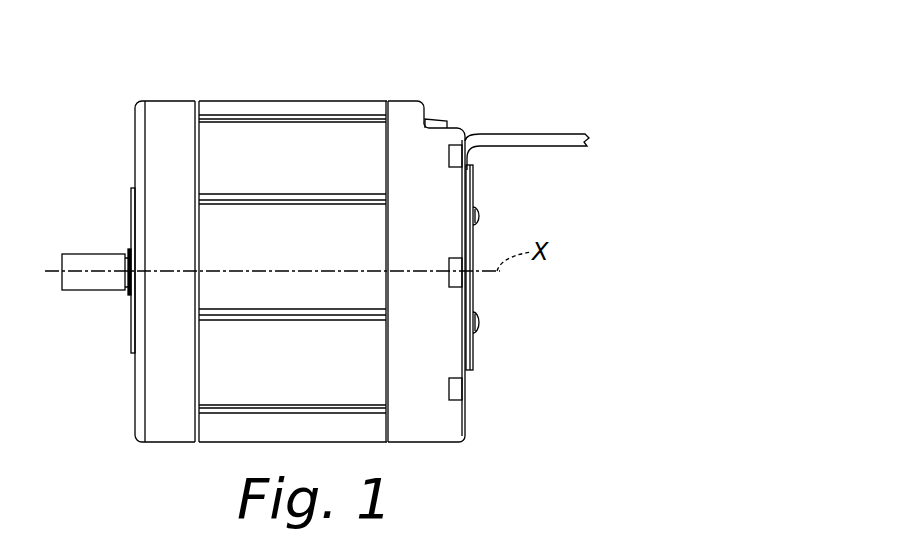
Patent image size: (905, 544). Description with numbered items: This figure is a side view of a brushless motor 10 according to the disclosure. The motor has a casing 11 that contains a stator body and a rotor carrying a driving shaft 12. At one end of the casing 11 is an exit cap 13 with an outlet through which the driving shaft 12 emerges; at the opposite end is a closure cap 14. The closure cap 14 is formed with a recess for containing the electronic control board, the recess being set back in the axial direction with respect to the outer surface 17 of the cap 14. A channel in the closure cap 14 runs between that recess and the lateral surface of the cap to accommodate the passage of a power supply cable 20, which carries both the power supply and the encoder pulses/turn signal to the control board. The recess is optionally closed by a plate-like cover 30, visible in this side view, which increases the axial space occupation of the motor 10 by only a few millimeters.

The brushless motor 10 is at (478, 97).
The casing 11 is at (295, 165).
The driving shaft 12 is at (83, 263).
The exit cap 13 is at (158, 182).
The closure cap 14 is at (431, 452).
The outer surface 17 is at (476, 343).
The power supply cable 20 is at (546, 137).
The plate-like cover 30 is at (474, 188).